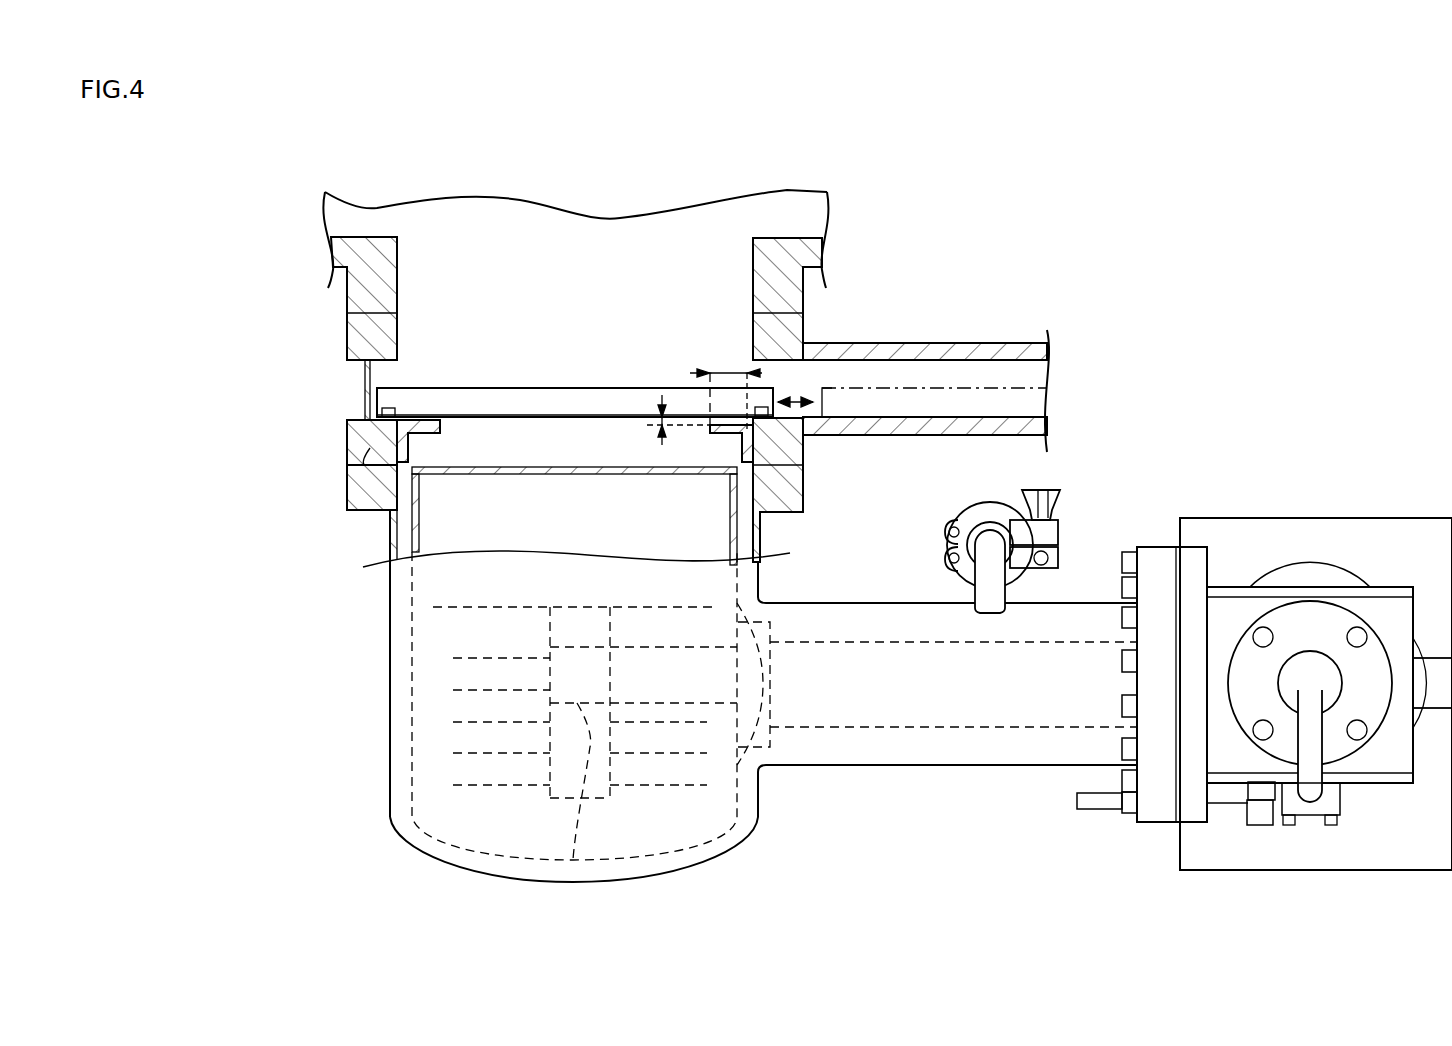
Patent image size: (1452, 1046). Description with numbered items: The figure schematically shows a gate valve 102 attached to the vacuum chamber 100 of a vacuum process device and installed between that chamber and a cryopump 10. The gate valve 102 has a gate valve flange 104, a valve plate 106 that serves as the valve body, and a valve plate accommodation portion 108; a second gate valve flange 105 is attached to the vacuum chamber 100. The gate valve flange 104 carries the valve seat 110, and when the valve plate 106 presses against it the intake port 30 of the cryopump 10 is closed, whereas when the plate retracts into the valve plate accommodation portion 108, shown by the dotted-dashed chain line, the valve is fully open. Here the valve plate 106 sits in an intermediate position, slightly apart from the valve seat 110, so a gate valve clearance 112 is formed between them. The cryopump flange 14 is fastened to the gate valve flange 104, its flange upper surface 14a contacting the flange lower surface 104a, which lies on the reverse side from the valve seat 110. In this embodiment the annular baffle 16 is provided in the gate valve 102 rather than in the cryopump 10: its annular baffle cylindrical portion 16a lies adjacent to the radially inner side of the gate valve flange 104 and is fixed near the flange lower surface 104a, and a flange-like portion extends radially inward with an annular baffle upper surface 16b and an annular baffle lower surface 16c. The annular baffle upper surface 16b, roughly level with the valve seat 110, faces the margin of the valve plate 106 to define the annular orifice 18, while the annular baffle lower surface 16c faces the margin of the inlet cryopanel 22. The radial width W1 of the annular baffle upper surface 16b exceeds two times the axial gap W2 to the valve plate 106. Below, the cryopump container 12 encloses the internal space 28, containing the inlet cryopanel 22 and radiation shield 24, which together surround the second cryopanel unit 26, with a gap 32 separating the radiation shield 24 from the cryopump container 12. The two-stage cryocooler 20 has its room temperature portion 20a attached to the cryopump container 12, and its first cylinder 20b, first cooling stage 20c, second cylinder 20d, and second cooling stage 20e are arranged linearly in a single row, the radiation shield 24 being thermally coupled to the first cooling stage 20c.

The cryopump 10 is at (388, 858).
The cryopump container 12 is at (707, 862).
The cryopump flange 14 is at (356, 478).
The flange upper surface 14a is at (368, 448).
The annular baffle 16 is at (447, 430).
The annular baffle cylindrical portion 16a is at (396, 445).
The annular baffle upper surface 16b is at (426, 422).
The annular baffle lower surface 16c is at (418, 433).
The annular orifice 18 is at (728, 418).
The cryocooler 20 is at (1342, 503).
The room temperature portion 20a is at (1297, 871).
The first cylinder 20b is at (962, 729).
The first cooling stage 20c is at (775, 740).
The second cylinder 20d is at (710, 703).
The second cooling stage 20e is at (573, 862).
The inlet cryopanel 22 is at (698, 477).
The radiation shield 24 is at (737, 535).
The second cryopanel unit 26 is at (440, 705).
The internal space 28 is at (592, 512).
The intake port 30 is at (592, 452).
The gap 32 is at (403, 527).
The vacuum chamber 100 is at (587, 238).
The gate valve 102 is at (332, 343).
The gate valve flange 104 is at (364, 445).
The flange lower surface 104a is at (349, 497).
The second gate valve flange 105 is at (364, 298).
The valve plate 106 is at (567, 395).
The valve plate accommodation portion 108 is at (957, 350).
The valve seat 110 is at (381, 411).
The gate valve clearance 112 is at (416, 417).
The radial width W1 is at (727, 373).
The axial gap W2 is at (647, 425).